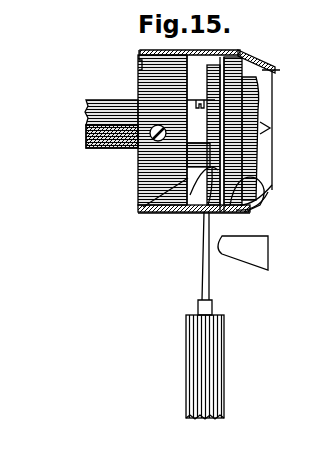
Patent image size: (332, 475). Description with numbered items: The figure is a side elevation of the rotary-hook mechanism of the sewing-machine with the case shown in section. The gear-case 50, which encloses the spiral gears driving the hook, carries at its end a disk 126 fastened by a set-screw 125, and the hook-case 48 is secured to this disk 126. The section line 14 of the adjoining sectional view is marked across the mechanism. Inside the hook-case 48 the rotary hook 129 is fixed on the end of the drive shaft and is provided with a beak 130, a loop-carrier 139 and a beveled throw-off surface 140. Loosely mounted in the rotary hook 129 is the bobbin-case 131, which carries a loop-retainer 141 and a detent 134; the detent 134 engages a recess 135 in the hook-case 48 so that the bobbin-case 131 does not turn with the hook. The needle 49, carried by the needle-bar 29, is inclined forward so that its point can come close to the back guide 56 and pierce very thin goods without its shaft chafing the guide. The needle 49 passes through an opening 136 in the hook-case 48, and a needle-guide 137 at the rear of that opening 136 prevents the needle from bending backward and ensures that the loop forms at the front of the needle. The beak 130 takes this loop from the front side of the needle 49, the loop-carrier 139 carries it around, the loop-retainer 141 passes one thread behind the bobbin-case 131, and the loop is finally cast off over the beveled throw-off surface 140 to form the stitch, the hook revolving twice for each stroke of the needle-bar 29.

The shaft 14 is at (85, 130).
The needle-bar 29 is at (185, 383).
The hook-case 48 is at (248, 58).
The needle 49 is at (202, 275).
The gear-case 50 is at (103, 163).
The back guide 56 is at (248, 253).
The set-screw 125 is at (151, 127).
The disk 126 is at (137, 72).
The rotary hook 129 is at (294, 124).
The beak 130 is at (248, 208).
The bobbin-case 131 is at (250, 94).
The detent 134 is at (265, 172).
The recess 135 is at (268, 192).
The opening 136 is at (213, 225).
The needle-guide 137 is at (203, 218).
The loop-carrier 139 is at (143, 213).
The beveled throw-off surface 140 is at (257, 53).
The loop-retainer 141 is at (115, 35).